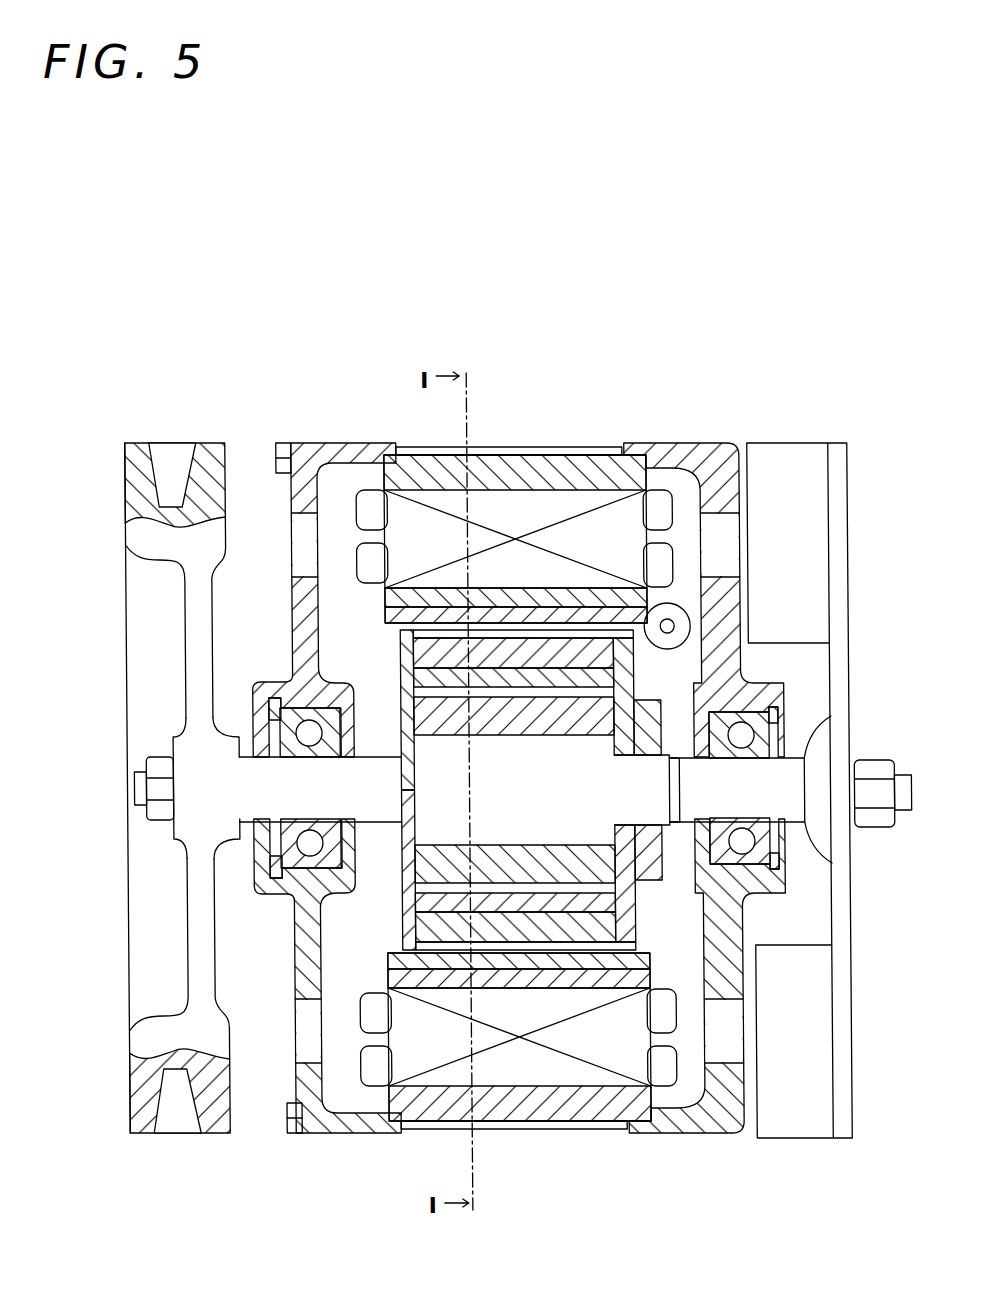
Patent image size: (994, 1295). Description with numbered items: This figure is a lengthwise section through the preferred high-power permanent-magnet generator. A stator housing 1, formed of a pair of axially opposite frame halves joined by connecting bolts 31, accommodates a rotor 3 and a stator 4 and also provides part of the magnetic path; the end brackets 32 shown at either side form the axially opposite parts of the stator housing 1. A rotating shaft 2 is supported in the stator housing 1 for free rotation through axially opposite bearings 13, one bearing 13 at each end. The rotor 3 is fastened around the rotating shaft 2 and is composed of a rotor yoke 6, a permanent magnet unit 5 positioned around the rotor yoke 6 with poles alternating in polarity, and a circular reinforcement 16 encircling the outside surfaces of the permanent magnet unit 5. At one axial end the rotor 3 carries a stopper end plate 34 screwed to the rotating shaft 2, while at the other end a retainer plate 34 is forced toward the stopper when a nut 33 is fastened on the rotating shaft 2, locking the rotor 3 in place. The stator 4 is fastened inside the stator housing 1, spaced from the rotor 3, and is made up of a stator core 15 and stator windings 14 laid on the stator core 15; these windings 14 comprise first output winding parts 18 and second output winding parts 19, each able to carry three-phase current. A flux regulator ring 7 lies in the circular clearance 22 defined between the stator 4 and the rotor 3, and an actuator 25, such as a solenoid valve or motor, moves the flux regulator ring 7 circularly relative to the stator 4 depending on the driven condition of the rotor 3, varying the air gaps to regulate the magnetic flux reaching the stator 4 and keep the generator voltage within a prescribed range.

The stator housing 1 is at (750, 441).
The rotating shaft 2 is at (777, 783).
The rotor 3 is at (400, 670).
The stator 4 is at (555, 498).
The permanent magnet unit 5 is at (645, 580).
The rotor yoke 6 is at (330, 898).
The flux regulator ring 7 is at (437, 598).
The bearings 13 is at (770, 725).
The stator windings 14 is at (682, 525).
The stator core 15 is at (592, 545).
The circular reinforcement 16 is at (492, 628).
The first output winding parts 18 is at (658, 510).
The second output winding parts 19 is at (660, 578).
The circular clearance 22 is at (510, 947).
The actuator 25 is at (680, 617).
The connecting bolts 31 is at (282, 440).
The end bracket 32 is at (345, 440).
The nut 33 is at (660, 715).
The end plate 34 is at (620, 682).